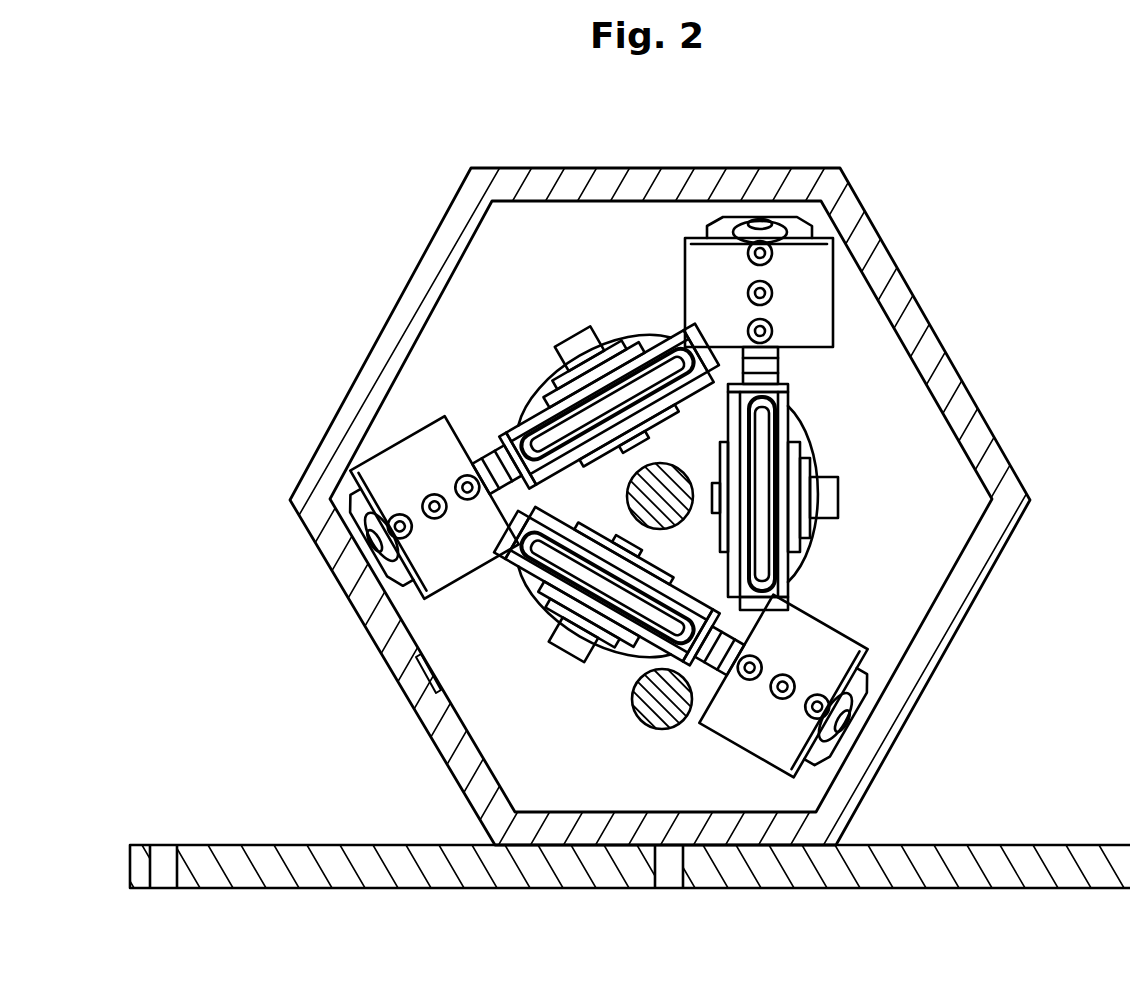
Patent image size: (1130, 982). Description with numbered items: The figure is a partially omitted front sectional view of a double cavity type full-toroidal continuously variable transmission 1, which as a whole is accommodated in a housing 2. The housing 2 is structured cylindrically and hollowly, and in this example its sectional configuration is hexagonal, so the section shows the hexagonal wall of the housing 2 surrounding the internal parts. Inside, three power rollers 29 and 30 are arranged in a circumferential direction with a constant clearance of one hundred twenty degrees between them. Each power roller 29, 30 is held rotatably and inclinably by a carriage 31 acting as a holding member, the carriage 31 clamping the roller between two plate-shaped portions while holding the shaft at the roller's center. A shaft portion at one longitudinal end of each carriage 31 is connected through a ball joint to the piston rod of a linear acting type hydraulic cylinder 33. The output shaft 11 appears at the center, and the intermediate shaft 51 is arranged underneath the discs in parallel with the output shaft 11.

The continuously variable transmission 1 is at (893, 173).
The housing 2 is at (755, 178).
The output shaft 11 is at (676, 519).
The power roller 29 is at (684, 467).
The power roller 30 is at (764, 438).
The carriage 31 is at (786, 568).
The hydraulic cylinder 33 is at (821, 326).
The intermediate shaft 51 is at (658, 712).